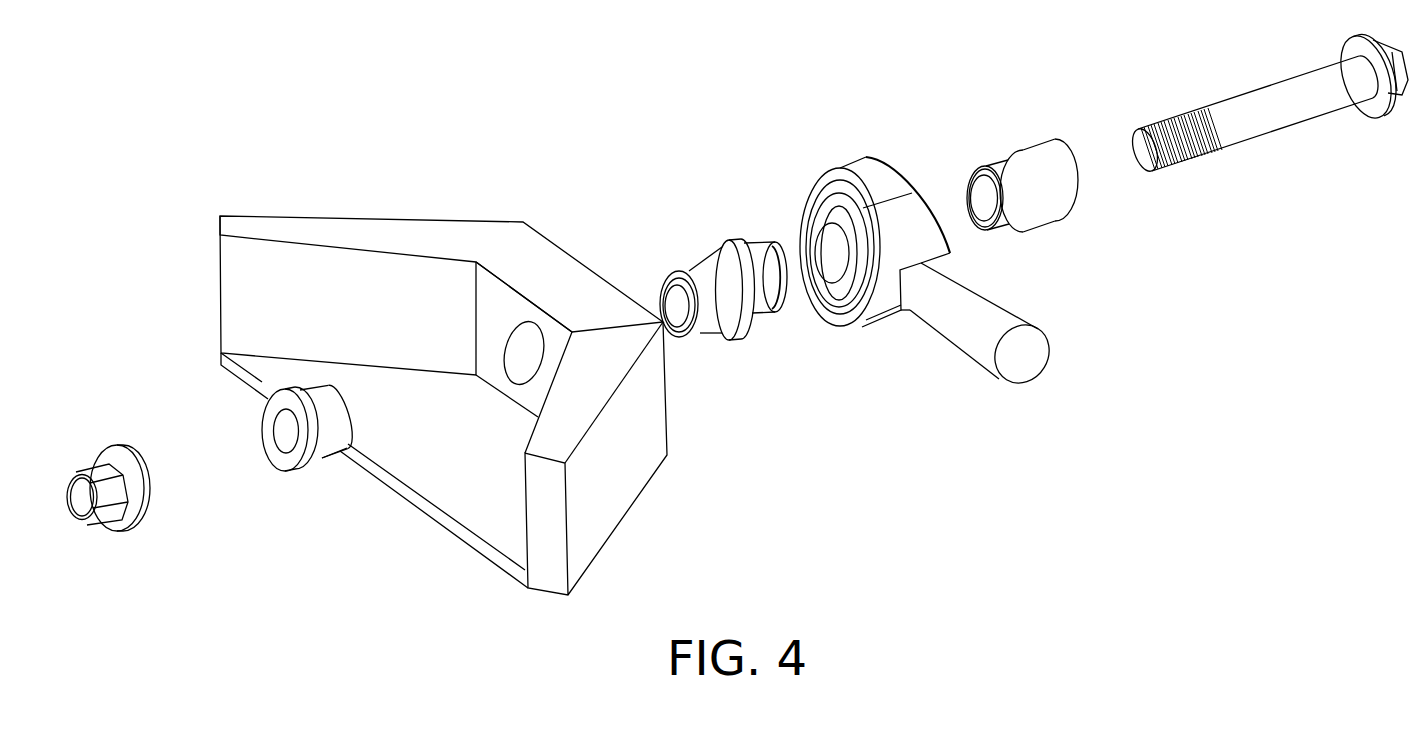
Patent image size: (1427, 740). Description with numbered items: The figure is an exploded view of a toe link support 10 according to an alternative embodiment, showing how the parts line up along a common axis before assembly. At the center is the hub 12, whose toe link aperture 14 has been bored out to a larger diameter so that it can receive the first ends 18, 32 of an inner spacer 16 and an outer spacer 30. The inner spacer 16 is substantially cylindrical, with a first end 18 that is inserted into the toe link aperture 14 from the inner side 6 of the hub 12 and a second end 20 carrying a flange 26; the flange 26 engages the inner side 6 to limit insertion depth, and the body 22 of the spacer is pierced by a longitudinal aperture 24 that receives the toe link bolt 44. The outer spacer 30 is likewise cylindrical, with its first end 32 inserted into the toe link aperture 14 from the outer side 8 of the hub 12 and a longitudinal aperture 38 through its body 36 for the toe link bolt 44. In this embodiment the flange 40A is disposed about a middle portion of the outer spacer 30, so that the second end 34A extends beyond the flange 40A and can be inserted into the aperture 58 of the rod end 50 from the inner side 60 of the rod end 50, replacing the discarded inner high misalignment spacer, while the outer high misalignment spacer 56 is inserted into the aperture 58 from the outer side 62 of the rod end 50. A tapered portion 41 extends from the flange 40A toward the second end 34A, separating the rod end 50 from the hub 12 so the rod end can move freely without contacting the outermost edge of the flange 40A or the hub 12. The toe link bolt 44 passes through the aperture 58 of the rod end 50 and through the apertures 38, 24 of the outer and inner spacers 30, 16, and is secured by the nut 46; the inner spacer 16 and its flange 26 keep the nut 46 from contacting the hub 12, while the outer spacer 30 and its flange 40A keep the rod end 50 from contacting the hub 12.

The toe link support 10 is at (603, 76).
The outer side 8 is at (574, 250).
The hub 12 is at (413, 233).
The inner side 6 is at (541, 403).
The toe link aperture 14 is at (515, 350).
The inner spacer 16 is at (322, 460).
The first end 18 is at (352, 447).
The second end 20 is at (300, 465).
The bushing body 22 is at (313, 393).
The longitudinal aperture 24 is at (286, 432).
The flange 26 is at (293, 395).
The outer spacer 30 is at (697, 271).
The first end 32 is at (687, 323).
The second end 34A is at (775, 302).
The spacer body 36 is at (696, 267).
The longitudinal aperture 38 is at (677, 307).
The flange 40A is at (716, 248).
The tapered portion 41 is at (752, 292).
The rod end 50 is at (857, 170).
The aperture 58 is at (830, 256).
The inner side 60 is at (865, 313).
The outer side 62 is at (917, 176).
The outer high misalignment spacer 56 is at (1038, 153).
The toe link bolt 44 is at (1282, 117).
The nut 46 is at (117, 515).